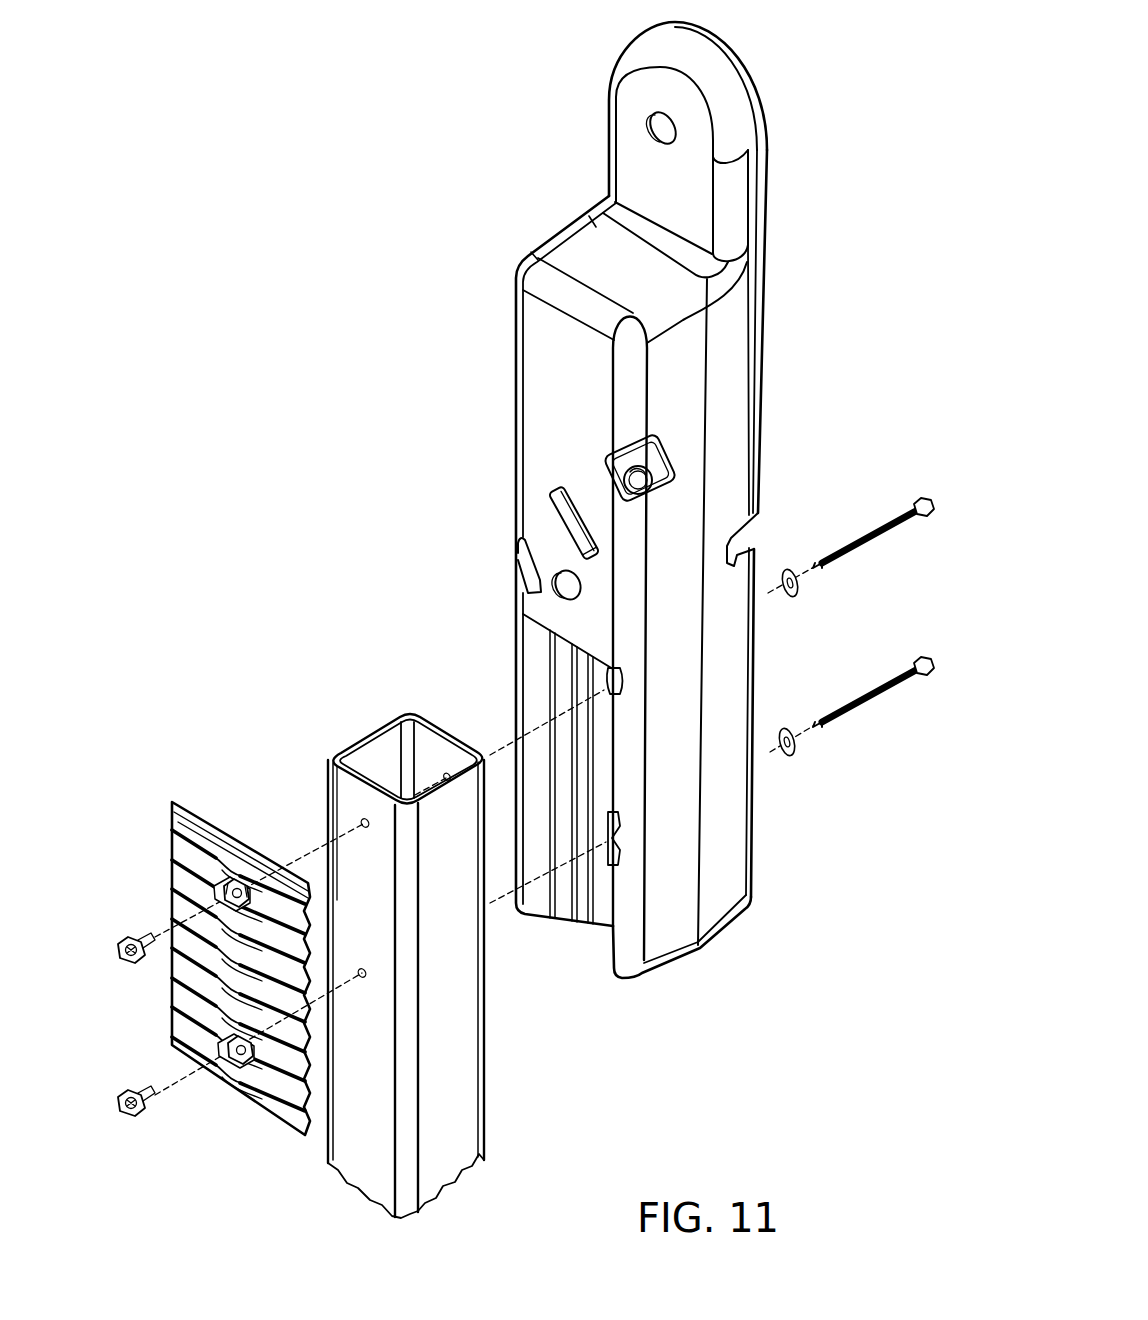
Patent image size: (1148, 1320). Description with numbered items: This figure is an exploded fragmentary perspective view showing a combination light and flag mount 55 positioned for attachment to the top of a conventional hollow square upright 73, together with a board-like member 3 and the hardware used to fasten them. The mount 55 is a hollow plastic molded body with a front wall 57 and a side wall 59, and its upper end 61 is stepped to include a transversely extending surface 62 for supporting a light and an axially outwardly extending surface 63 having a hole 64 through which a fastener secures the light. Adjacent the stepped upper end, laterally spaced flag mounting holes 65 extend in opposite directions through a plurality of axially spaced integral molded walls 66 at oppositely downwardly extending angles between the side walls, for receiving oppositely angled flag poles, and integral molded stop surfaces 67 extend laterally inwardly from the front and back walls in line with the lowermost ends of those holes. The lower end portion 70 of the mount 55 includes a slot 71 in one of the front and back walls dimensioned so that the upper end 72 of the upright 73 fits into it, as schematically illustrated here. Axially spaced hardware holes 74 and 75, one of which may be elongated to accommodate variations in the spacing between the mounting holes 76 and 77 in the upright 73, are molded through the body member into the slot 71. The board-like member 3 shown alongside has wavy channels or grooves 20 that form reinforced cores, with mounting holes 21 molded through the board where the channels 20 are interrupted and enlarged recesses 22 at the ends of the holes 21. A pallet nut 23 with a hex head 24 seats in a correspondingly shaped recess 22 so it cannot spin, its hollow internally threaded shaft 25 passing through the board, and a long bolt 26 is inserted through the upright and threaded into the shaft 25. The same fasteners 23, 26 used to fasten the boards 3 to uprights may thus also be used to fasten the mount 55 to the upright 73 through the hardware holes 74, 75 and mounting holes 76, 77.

The board-like member 3 is at (197, 813).
The channels or grooves 20 is at (213, 971).
The mounting holes 21 is at (236, 885).
The enlarged recesses 22 is at (223, 897).
The pallet nut 23 is at (130, 1018).
The hex head 24 is at (114, 935).
The internally threaded shaft 25 is at (155, 937).
The long bolt 26 is at (868, 533).
The combination light and flag mount 55 is at (510, 262).
The front wall 57 is at (762, 443).
The side wall 59 is at (733, 383).
The upper end 61 is at (738, 322).
The transversely extending surface 62 is at (585, 245).
The axially outwardly extending surface 63 is at (688, 183).
The hole 64 is at (673, 125).
The flag mounting holes 65 is at (558, 522).
The integral molded walls 66 is at (612, 462).
The stop surfaces 67 is at (752, 535).
The lower end portion 70 is at (725, 818).
The slot 71 is at (540, 700).
The upper end 72 is at (330, 803).
The upright 73 is at (450, 1020).
The hardware hole 74 is at (606, 680).
The hardware hole 75 is at (610, 855).
The mounting hole 76 is at (345, 817).
The mounting hole 77 is at (364, 978).